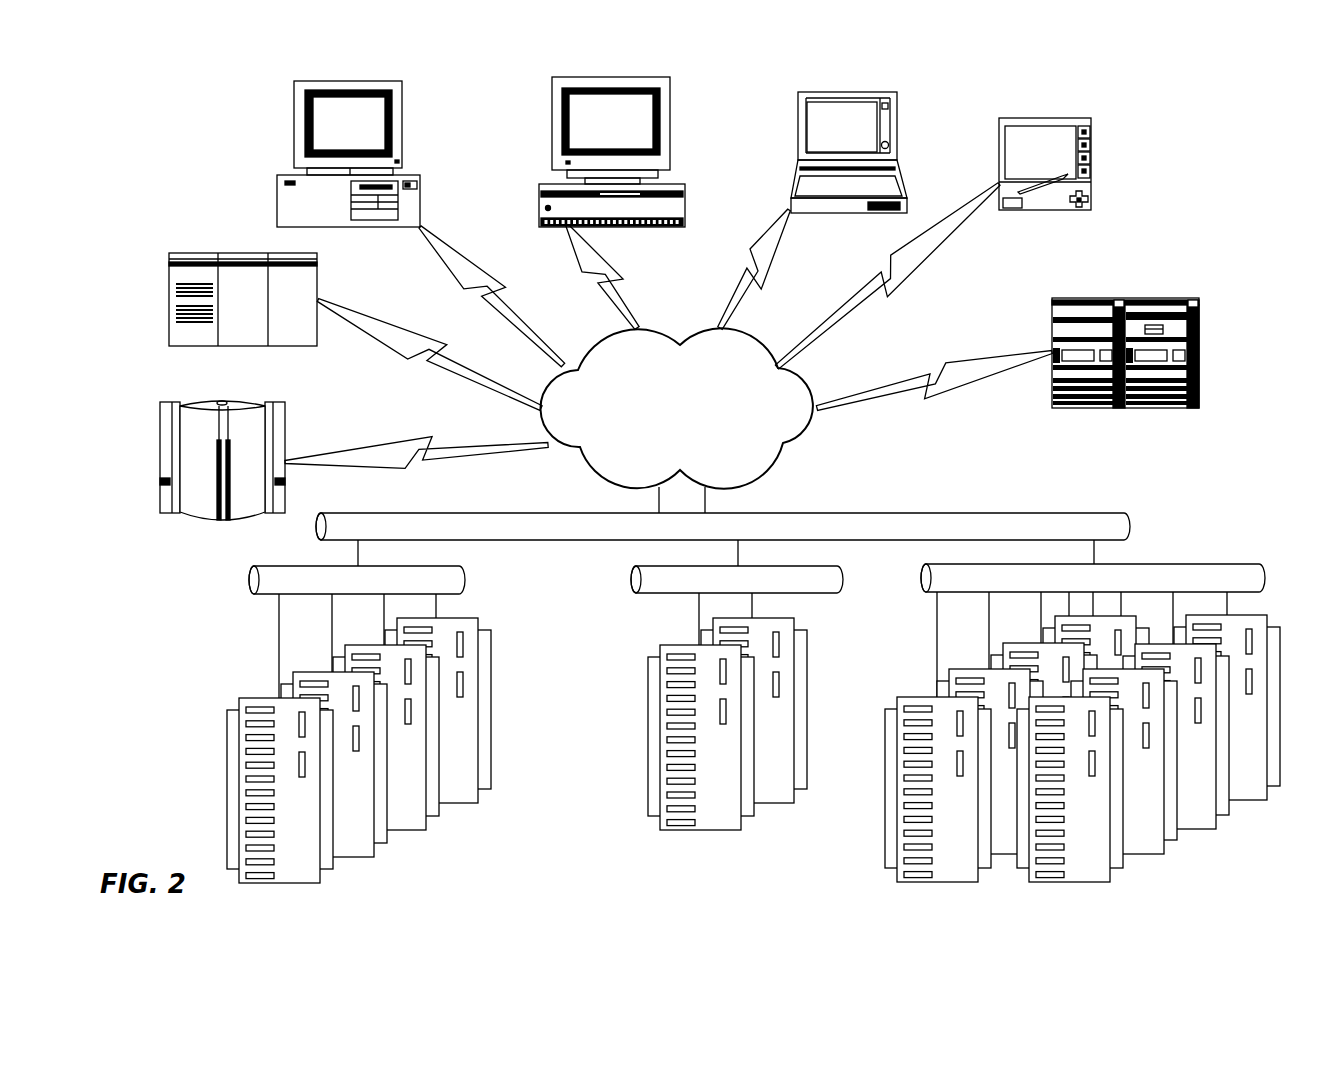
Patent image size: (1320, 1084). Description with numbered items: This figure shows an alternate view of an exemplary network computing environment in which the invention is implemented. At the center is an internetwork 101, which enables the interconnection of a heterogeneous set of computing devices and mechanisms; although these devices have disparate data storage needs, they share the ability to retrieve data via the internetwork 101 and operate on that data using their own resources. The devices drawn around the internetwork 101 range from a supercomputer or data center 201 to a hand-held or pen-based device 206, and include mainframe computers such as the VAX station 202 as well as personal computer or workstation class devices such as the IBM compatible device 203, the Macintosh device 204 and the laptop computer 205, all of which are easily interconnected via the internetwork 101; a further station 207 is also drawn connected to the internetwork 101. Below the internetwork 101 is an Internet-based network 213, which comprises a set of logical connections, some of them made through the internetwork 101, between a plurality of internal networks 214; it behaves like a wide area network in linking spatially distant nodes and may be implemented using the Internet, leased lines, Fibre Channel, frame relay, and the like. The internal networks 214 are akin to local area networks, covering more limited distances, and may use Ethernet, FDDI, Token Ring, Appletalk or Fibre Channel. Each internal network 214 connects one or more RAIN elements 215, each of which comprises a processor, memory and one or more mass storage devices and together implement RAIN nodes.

The internetwork 101 is at (667, 414).
The supercomputer or data center 201 is at (160, 460).
The VAX station 202 is at (169, 297).
The IBM compatible device 203 is at (277, 183).
The Macintosh device 204 is at (538, 190).
The laptop computer 205 is at (798, 152).
The hand-held or pen-based device 206 is at (999, 163).
The server computer 207 is at (1201, 347).
The Internet-based network 213 is at (583, 545).
The internal network 214 is at (248, 580).
The RAIN element 215 is at (227, 790).